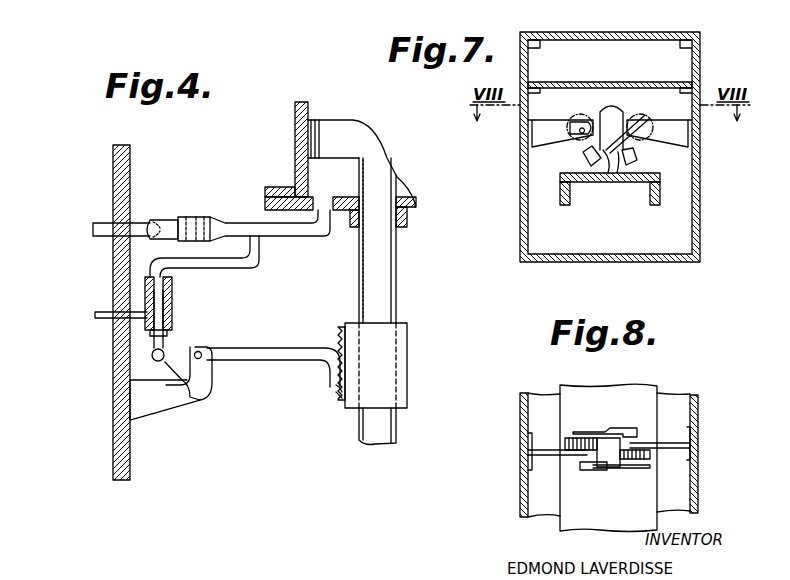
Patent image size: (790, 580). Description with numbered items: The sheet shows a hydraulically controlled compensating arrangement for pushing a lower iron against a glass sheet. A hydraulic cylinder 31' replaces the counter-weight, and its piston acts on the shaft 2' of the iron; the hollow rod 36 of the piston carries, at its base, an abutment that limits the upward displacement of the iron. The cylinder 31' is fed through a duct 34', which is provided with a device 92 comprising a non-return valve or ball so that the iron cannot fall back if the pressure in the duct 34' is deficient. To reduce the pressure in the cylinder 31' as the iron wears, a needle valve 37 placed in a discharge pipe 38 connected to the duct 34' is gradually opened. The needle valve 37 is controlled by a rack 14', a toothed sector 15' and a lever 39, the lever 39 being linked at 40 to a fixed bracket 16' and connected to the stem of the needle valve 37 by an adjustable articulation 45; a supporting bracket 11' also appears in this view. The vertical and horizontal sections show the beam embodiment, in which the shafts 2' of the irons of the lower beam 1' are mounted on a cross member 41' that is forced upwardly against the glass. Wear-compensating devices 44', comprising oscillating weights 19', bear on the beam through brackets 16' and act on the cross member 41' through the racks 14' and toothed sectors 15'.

In FIG. 4, the shaft 2' is at (187, 13).
In FIG. 7, the lower beam 1' is at (585, 147).
In FIG. 8, the lower beam 1' is at (579, 455).
In FIG. 4, the supporting bracket 11' is at (404, 365).
In FIG. 4, the rack 14' is at (327, 382).
In FIG. 7, the rack 14' is at (617, 117).
In FIG. 4, the toothed sector 15' is at (311, 386).
In FIG. 7, the toothed sector 15' is at (617, 120).
In FIG. 8, the toothed sector 15' is at (610, 450).
In FIG. 4, the fixed bracket 16' is at (156, 312).
In FIG. 7, the fixed bracket 16' is at (612, 135).
In FIG. 8, the fixed bracket 16' is at (610, 451).
In FIG. 7, the oscillating weights 19' is at (615, 159).
In FIG. 8, the oscillating weights 19' is at (606, 456).
In FIG. 4, the hydraulic cylinder 31' is at (333, 159).
In FIG. 4, the duct 34' is at (211, 212).
In FIG. 4, the hollow rod 36 is at (397, 292).
In FIG. 4, the needle valve 37 is at (170, 291).
In FIG. 4, the discharge pipe 38 is at (262, 263).
In FIG. 4, the lever 39 is at (268, 348).
In FIG. 4, the link point 40 is at (202, 351).
In FIG. 7, the cross member 41' is at (565, 190).
In FIG. 8, the cross member 41' is at (615, 443).
In FIG. 7, the wear-compensating devices 44' is at (608, 186).
In FIG. 8, the wear-compensating devices 44' is at (615, 476).
In FIG. 4, the adjustable articulation 45 is at (166, 366).
In FIG. 4, the non-return device 92 is at (170, 222).